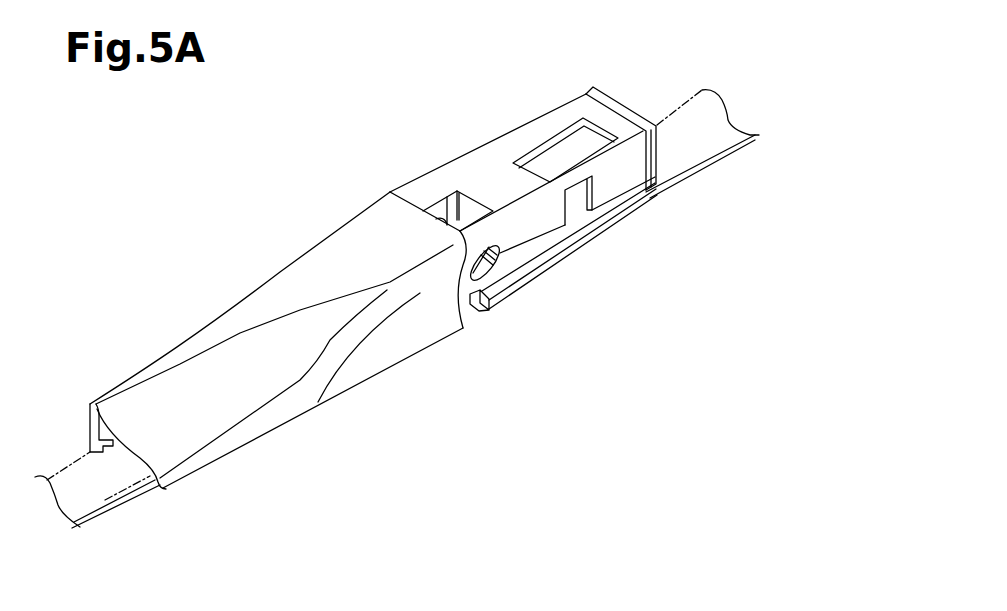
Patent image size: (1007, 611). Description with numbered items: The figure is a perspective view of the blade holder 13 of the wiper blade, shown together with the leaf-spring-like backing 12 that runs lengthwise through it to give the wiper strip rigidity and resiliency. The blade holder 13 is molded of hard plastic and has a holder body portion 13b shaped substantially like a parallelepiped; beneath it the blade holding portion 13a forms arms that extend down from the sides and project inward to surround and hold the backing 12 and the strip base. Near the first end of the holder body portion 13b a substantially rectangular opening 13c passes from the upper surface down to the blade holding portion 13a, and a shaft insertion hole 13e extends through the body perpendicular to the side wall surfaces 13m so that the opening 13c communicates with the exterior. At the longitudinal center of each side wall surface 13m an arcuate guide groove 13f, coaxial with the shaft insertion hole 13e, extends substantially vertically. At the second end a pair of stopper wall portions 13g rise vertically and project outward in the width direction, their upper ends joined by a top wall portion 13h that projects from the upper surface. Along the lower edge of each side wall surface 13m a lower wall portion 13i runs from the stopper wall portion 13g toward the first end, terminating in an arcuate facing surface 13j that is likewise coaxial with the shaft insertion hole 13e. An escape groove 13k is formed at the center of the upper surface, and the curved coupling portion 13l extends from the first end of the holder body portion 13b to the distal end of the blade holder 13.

The backing 12 is at (108, 507).
The blade holder 13 is at (345, 206).
The blade holding portion 13a is at (557, 266).
The holder body portion 13b is at (502, 170).
The opening 13c is at (468, 210).
The shaft insertion hole 13e is at (490, 268).
The guide groove 13f is at (595, 190).
The stopper wall portion 13g is at (647, 156).
The top wall portion 13h is at (638, 85).
The lower wall portion 13i is at (587, 233).
The facing surface 13j is at (488, 313).
The escape groove 13k is at (560, 150).
The curved coupling portion 13l is at (237, 352).
The side wall surface 13m is at (533, 246).